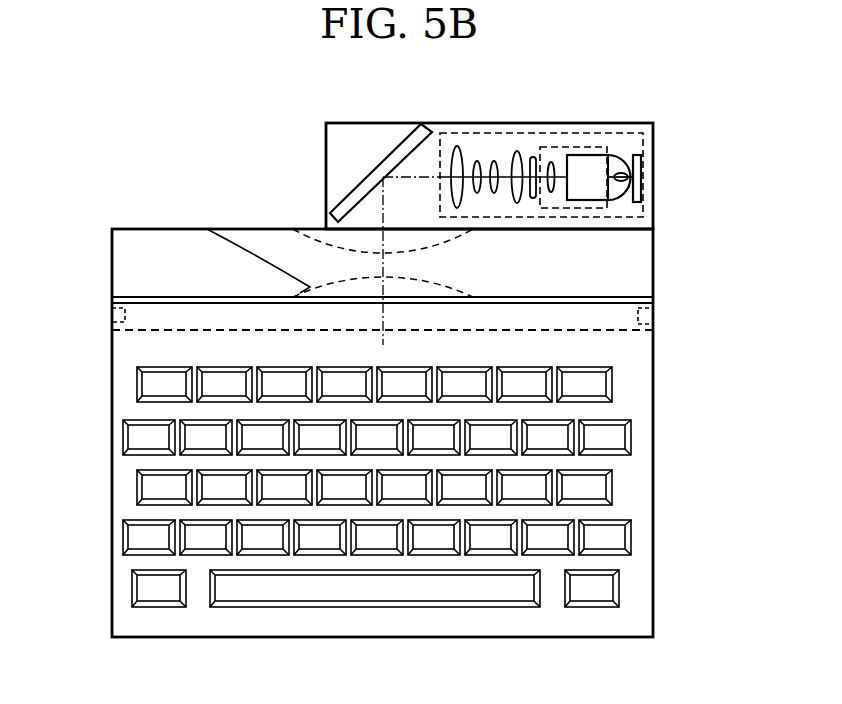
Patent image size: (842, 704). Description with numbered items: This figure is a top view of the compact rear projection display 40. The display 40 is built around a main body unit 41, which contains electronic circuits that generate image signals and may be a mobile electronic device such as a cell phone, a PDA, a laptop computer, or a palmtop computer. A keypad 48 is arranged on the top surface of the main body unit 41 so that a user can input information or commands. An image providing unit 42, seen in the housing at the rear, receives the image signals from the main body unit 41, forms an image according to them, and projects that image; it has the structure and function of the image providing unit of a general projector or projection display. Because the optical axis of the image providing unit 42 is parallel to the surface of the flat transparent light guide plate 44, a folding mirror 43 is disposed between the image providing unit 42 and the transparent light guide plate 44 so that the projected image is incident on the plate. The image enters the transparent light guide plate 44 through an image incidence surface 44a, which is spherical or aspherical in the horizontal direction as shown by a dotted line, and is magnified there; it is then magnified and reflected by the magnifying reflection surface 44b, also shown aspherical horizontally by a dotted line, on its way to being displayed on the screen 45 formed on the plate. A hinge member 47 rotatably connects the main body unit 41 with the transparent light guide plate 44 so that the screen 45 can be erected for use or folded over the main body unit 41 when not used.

The compact rear projection display 40 is at (160, 698).
The main body unit 41 is at (138, 620).
The image providing unit 42 is at (602, 133).
The folding mirror 43 is at (372, 176).
The transparent light guide plate 44 is at (645, 268).
The image incidence surface 44a is at (340, 242).
The magnifying reflection surface 44b is at (207, 229).
The screen 45 is at (613, 303).
The hinge member 47 is at (113, 313).
The keypad 48 is at (140, 435).